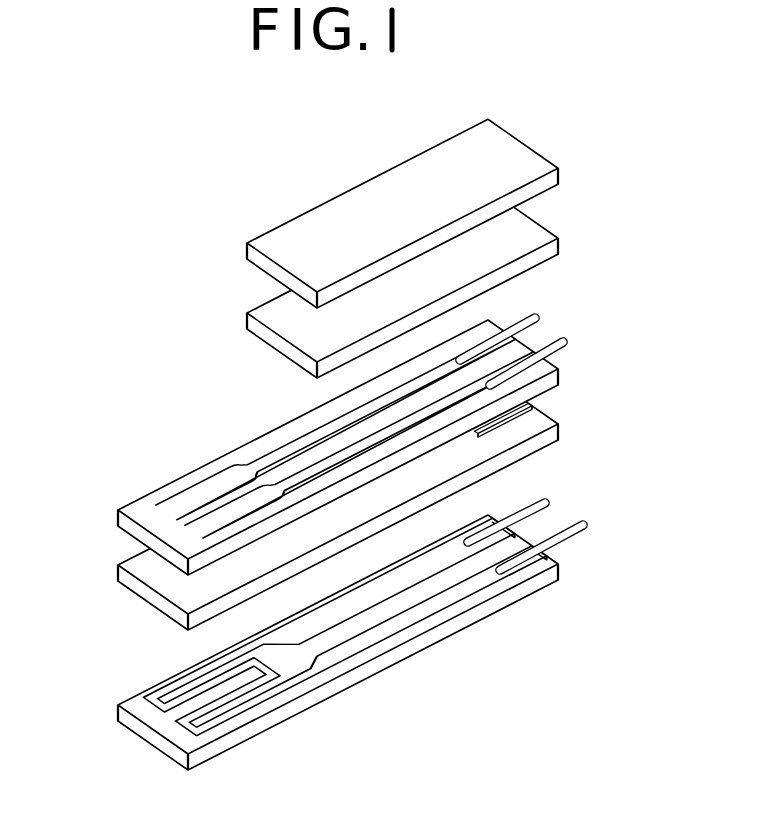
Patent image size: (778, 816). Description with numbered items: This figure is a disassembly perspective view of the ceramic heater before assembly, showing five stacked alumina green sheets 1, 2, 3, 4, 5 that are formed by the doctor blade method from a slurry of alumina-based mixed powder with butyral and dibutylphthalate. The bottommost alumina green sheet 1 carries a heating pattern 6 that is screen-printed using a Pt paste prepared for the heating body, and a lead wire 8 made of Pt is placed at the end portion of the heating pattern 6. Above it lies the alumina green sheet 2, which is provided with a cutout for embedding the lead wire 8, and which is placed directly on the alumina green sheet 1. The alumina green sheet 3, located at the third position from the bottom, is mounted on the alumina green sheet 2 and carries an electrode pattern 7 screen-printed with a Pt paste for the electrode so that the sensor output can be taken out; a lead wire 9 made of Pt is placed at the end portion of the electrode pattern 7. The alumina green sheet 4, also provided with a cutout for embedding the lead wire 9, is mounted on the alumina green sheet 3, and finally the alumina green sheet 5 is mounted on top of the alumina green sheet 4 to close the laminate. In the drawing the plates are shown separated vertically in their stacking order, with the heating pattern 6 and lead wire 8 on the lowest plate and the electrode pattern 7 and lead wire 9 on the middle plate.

The alumina green sheet 1 is at (130, 734).
The alumina green sheet 2 is at (133, 595).
The alumina green sheet 3 is at (123, 520).
The alumina green sheet 4 is at (250, 332).
The alumina green sheet 5 is at (258, 251).
The heating pattern 6 is at (433, 602).
The electrode pattern 7 is at (262, 457).
The lead wire 8 is at (587, 525).
The lead wire 9 is at (562, 347).